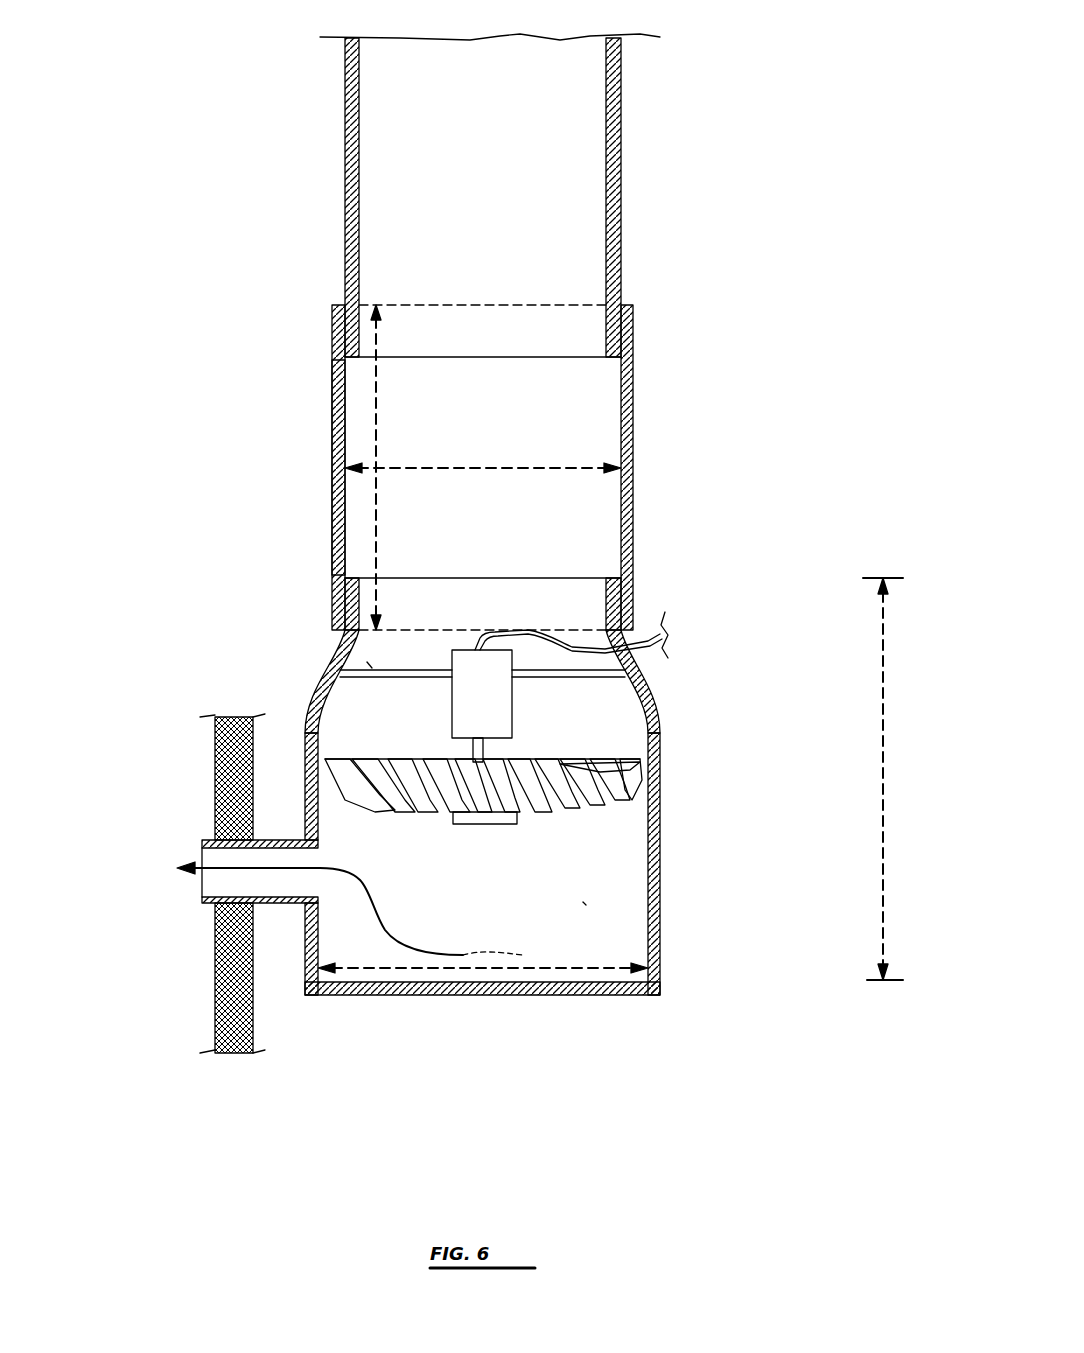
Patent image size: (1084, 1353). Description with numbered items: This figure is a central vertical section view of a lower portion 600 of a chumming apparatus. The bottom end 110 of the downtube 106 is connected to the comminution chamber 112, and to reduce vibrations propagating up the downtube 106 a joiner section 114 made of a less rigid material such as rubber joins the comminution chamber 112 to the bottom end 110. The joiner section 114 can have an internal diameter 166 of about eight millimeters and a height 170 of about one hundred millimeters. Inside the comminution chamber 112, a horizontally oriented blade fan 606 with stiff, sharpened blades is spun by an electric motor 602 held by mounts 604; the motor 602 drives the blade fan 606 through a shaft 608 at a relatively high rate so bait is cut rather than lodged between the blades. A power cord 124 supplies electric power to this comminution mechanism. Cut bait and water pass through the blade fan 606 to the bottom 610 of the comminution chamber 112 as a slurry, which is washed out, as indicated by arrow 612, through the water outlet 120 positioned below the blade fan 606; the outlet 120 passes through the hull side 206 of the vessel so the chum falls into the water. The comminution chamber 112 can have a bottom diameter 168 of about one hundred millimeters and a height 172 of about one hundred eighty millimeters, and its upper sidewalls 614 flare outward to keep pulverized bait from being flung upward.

The lower portion 600 is at (80, 91).
The downtube 106 is at (345, 148).
The bottom end 110 is at (345, 300).
The joiner section 114 is at (332, 382).
The internal diameter 166 is at (492, 467).
The height 170 is at (376, 508).
The power cord 124 is at (648, 632).
The mounts 604 is at (367, 665).
The upper sidewalls 614 is at (323, 672).
The electric motor 602 is at (512, 688).
The shaft 608 is at (487, 748).
The blade fan 606 is at (590, 805).
The water outlet 120 is at (202, 838).
The comminution chamber 112 is at (660, 910).
The bottom 610 is at (583, 902).
The hull side 206 is at (215, 970).
The arrow 612 is at (417, 950).
The bottom diameter 168 is at (542, 970).
The height 172 is at (883, 790).